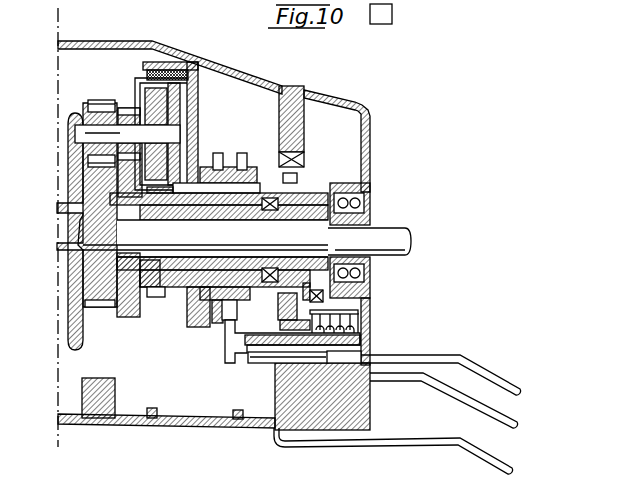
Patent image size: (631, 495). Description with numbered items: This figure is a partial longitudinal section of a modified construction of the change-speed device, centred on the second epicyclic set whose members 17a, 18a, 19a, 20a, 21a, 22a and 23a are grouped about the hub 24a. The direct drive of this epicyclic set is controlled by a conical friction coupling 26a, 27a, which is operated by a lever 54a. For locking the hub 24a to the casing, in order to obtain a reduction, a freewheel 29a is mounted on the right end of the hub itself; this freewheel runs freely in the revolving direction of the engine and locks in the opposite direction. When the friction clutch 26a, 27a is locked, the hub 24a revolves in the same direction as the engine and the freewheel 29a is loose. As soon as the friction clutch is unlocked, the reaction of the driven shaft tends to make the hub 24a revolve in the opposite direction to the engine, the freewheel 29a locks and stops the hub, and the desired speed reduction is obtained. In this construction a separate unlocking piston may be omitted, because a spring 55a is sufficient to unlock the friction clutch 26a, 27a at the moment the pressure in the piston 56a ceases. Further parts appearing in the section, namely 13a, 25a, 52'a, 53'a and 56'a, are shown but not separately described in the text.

The housing 13a is at (305, 93).
The second epicyclic set 17a is at (76, 161).
The second epicyclic set 18a is at (80, 134).
The second epicyclic set 19a is at (89, 101).
The second epicyclic set 20a is at (125, 111).
The second epicyclic set 21a is at (133, 89).
The second epicyclic set 22a is at (97, 186).
The second epicyclic set 23a is at (112, 220).
The hub 24a is at (160, 205).
The magnet assembly 25a is at (203, 167).
The conical friction coupling 26a is at (173, 71).
The conical friction coupling 27a is at (172, 105).
The freewheel 29a is at (305, 165).
The lead rod 52'a is at (472, 400).
The lead rod 53'a is at (419, 451).
The lever 54a is at (227, 329).
The spring 55a is at (358, 318).
The piston 56a is at (258, 362).
The lead rod 56'a is at (441, 362).